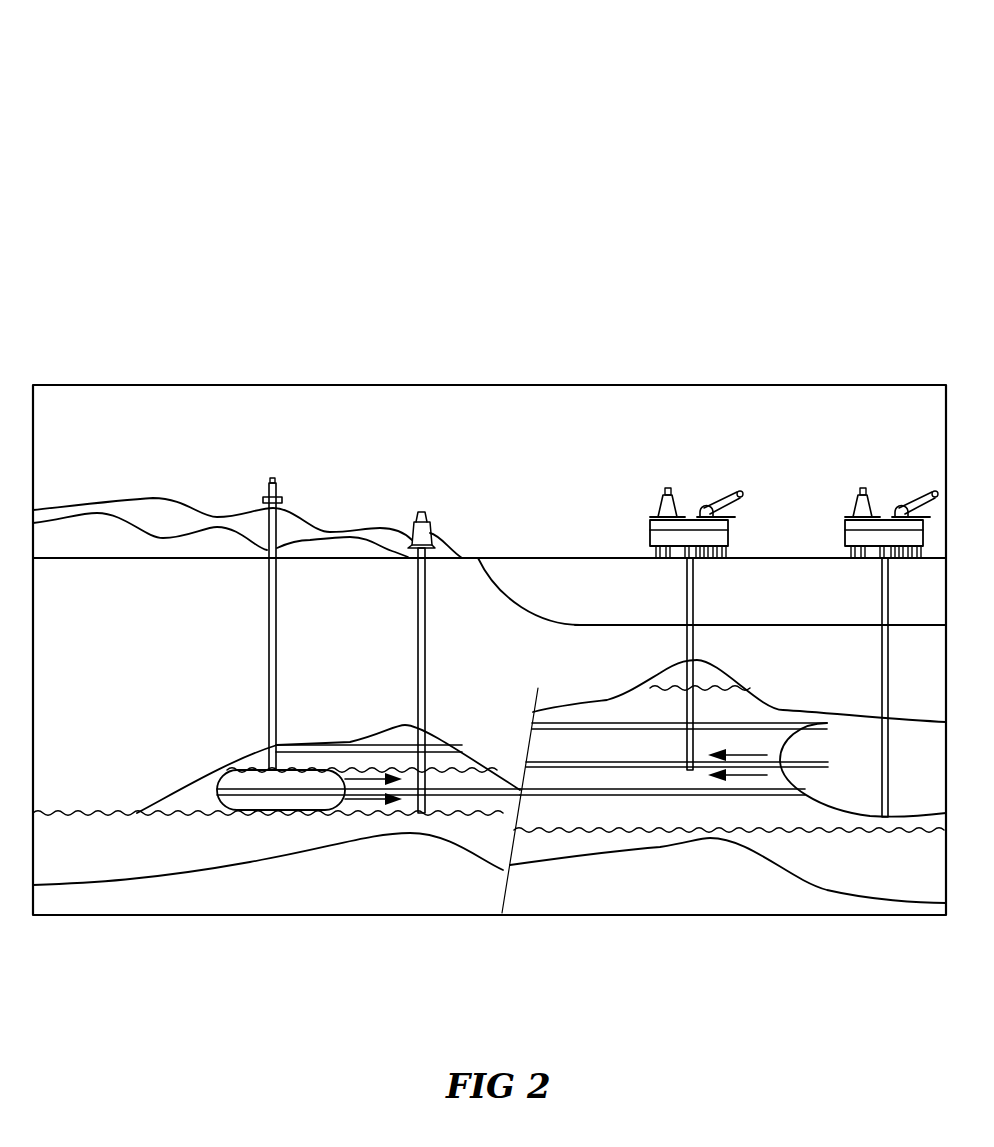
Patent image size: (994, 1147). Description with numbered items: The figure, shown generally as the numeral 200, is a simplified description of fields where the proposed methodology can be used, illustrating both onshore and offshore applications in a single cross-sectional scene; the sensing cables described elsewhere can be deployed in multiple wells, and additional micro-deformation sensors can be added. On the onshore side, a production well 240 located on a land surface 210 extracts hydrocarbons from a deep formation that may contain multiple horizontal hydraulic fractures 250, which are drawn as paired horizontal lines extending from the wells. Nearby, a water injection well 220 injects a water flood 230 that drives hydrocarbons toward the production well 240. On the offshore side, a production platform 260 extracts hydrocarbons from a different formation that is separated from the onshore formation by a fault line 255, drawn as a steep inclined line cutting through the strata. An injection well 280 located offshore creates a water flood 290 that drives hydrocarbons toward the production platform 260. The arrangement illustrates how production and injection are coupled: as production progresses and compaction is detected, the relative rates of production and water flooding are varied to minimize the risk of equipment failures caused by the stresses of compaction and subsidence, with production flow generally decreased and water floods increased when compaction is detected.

The simplified field description 200 is at (134, 100).
The land surface 210 is at (166, 497).
The water injection well 220 is at (268, 645).
The water flood 230 is at (218, 786).
The production well 240 is at (410, 547).
The horizontal hydraulic fractures 250 is at (410, 747).
The fault line 255 is at (520, 805).
The production platform 260 is at (650, 537).
The injection well 280 is at (860, 537).
The water flood 290 is at (863, 760).